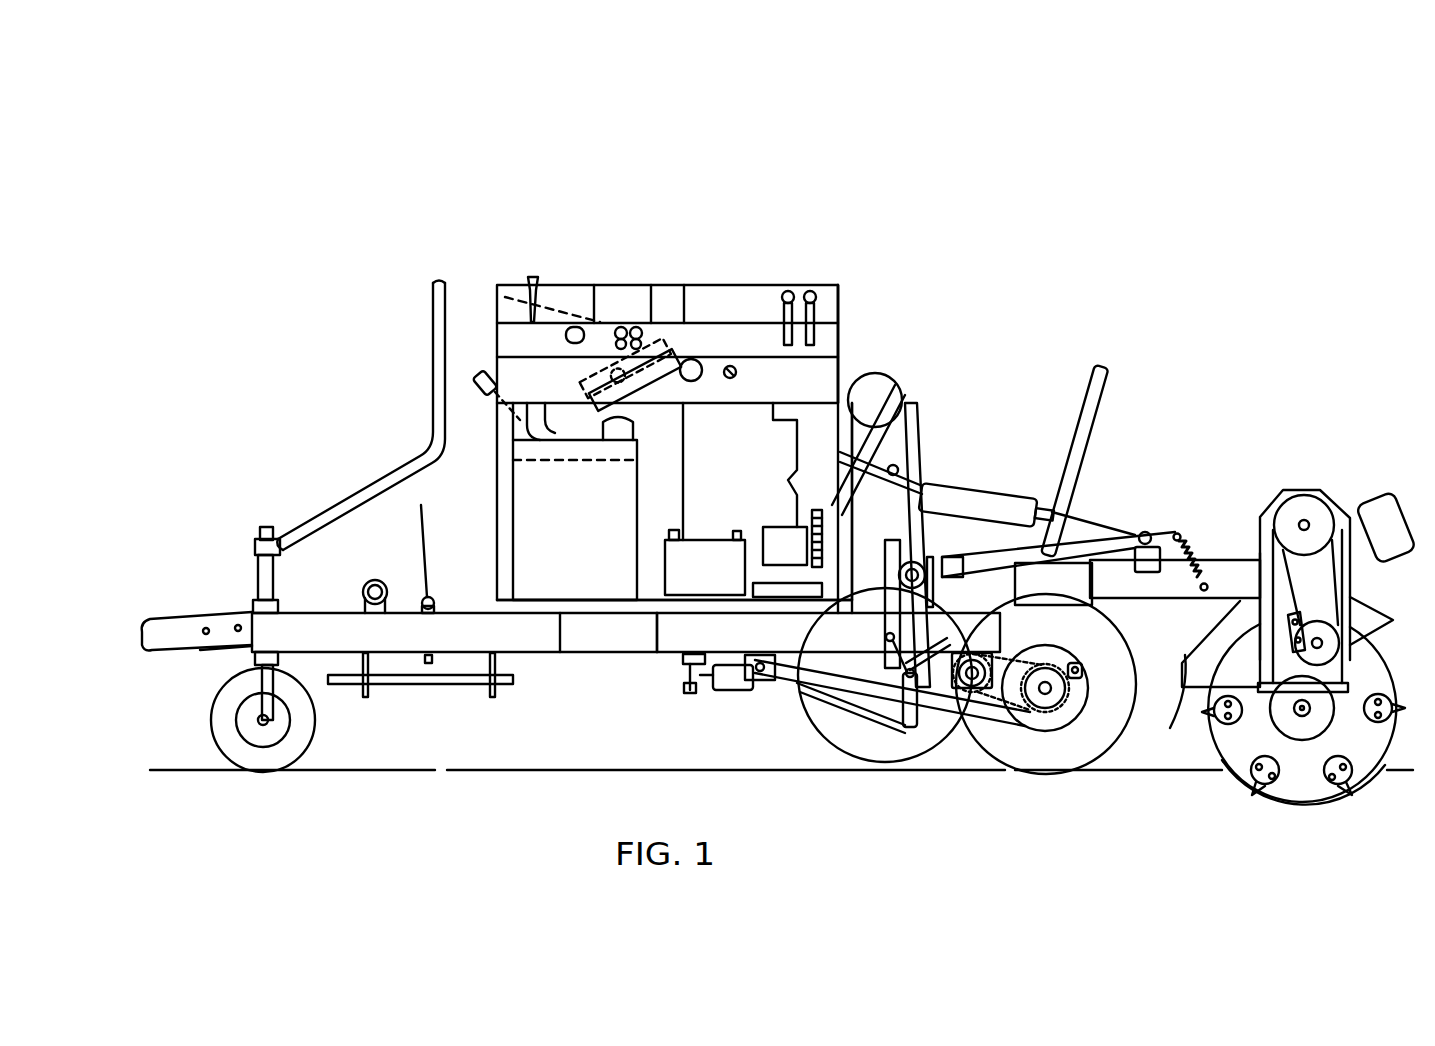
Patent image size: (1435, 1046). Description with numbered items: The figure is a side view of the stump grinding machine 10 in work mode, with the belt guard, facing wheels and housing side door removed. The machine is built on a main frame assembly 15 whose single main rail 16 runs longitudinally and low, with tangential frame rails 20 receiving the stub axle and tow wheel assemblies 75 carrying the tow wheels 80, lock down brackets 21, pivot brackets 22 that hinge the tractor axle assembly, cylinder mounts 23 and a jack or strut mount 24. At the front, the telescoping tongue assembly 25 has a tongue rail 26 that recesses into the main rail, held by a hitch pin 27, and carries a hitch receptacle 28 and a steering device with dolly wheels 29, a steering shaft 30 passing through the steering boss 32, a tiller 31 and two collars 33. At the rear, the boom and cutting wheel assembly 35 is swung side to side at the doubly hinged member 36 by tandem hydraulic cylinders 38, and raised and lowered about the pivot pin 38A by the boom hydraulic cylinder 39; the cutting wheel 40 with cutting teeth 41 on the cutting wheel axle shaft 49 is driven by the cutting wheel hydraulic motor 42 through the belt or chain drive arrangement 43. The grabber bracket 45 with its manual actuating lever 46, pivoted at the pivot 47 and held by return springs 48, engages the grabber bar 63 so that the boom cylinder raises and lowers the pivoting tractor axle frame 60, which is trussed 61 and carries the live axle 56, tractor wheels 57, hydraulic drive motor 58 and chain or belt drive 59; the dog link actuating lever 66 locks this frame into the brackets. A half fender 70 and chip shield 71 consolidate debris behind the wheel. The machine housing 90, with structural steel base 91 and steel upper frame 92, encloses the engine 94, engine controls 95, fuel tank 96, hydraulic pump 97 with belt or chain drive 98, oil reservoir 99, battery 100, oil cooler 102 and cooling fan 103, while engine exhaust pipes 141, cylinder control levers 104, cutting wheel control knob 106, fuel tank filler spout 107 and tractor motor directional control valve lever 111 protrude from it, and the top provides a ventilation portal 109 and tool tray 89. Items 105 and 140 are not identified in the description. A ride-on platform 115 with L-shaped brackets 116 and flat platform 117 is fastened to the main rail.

The stump grinding machine 10 is at (1025, 290).
The main frame assembly 15 is at (575, 655).
The main rail 16 is at (548, 655).
The tangential frame rails 20 is at (665, 654).
The double notched lock down brackets 21 is at (886, 600).
The pivot brackets 22 is at (760, 673).
The cylinder mounts 23 is at (690, 692).
The jack or strut mount 24 is at (378, 580).
The telescoping tongue assembly 25 is at (312, 655).
The tongue rail 26 is at (276, 539).
The hitch pin 27 is at (420, 503).
The hitch receptacle 28 is at (172, 612).
The dolly wheels 29 is at (225, 755).
The steering shaft 30 is at (262, 526).
The tiller 31 is at (432, 395).
The steering boss 32 is at (250, 655).
The collars 33 is at (255, 603).
The boom and cutting wheel assembly 35 is at (1250, 537).
The doubly hinged member 36 is at (897, 470).
The tandem hydraulic cylinders 38 is at (772, 680).
The pivot pin 38A is at (905, 472).
The boom hydraulic cylinder 39 is at (973, 480).
The cutting wheel 40 is at (1227, 772).
The cutting teeth 41 is at (1253, 787).
The cutting wheel hydraulic motor 42 is at (1313, 490).
The belt or chain drive arrangement 43 is at (1260, 572).
The grabber bracket 45 is at (1093, 520).
The manual actuating lever 46 is at (1100, 362).
The grabber bracket pivot 47 is at (1148, 532).
The grabber bracket return springs 48 is at (1197, 533).
The cutting wheel axle shaft 49 is at (1302, 716).
The live axle 56 is at (1045, 694).
The tractor wheels 57 is at (1107, 658).
The hydraulic drive motor 58 is at (965, 730).
The chain or belt drive 59 is at (1002, 712).
The pivoting tractor axle frame 60 is at (1032, 718).
The truss 61 is at (897, 745).
The grabber bar 63 is at (1060, 692).
The dog link actuating lever 66 is at (917, 420).
The half fender 70 is at (1219, 644).
The chip shield 71 is at (1117, 660).
The stub axle and tow wheel assemblies 75 is at (872, 700).
The tow wheels 80 is at (912, 740).
The tool tray 89 is at (683, 281).
The machine housing 90 is at (720, 285).
The structural steel base 91 is at (493, 590).
The steel upper frame 92 is at (497, 505).
The engine 94 is at (695, 444).
The engine controls 95 is at (633, 285).
The fuel tank 96 is at (565, 458).
The hydraulic pump 97 is at (840, 385).
The belt or chain drive 98 is at (907, 403).
The oil reservoir 99 is at (552, 556).
The battery 100 is at (707, 540).
The oil cooler 102 is at (603, 387).
The cooling fan 103 is at (651, 285).
The cylinder control levers 104 is at (805, 285).
The knob 105 is at (568, 330).
The cutting wheel control knob 106 is at (684, 285).
The fuel tank filler spout 107 is at (480, 375).
The ducted heat ventilation portal 109 is at (594, 285).
The tractor motor directional control valve lever 111 is at (530, 277).
The ride-on platform 115 is at (395, 688).
The L-shaped brackets 116 is at (492, 688).
The flat platform 117 is at (445, 688).
The switch 140 is at (745, 285).
The engine exhaust pipes 141 is at (882, 375).